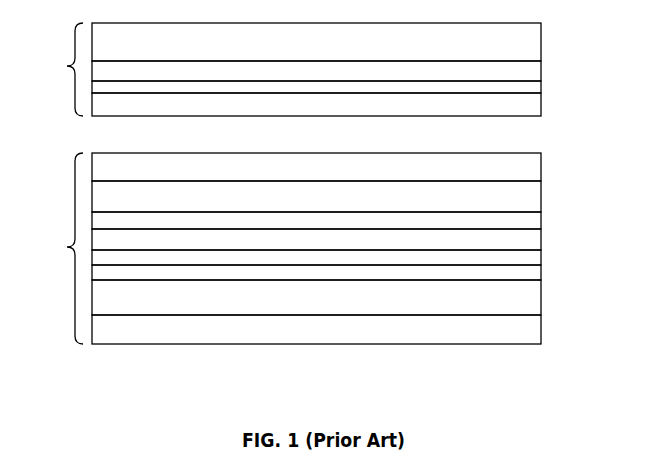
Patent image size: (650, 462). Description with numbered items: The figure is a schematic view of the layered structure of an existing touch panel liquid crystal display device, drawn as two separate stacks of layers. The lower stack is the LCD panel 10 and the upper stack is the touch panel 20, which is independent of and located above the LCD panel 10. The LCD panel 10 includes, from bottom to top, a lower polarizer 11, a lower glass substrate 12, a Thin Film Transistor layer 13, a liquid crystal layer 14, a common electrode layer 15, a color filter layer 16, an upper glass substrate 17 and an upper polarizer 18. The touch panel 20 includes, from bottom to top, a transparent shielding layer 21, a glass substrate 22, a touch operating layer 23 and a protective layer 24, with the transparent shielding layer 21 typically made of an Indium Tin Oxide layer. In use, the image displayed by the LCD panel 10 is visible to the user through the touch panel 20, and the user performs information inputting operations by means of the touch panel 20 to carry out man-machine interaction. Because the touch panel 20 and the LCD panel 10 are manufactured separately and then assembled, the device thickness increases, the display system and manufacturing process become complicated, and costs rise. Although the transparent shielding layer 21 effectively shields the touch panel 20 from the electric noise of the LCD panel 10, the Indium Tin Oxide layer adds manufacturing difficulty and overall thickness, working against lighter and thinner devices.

The LCD panel 10 is at (316, 248).
The lower polarizer 11 is at (525, 332).
The lower glass substrate 12 is at (525, 302).
The Thin Film Transistor (TFT) layer 13 is at (525, 277).
The liquid crystal layer 14 is at (525, 262).
The common electrode layer 15 is at (525, 242).
The color filter layer 16 is at (525, 224).
The upper glass substrate 17 is at (525, 199).
The upper polarizer 18 is at (525, 170).
The touch panel 20 is at (315, 69).
The transparent shielding layer 21 is at (525, 109).
The glass substrate 22 is at (525, 89).
The touch operating layer 23 is at (525, 72).
The protective layer 24 is at (525, 49).